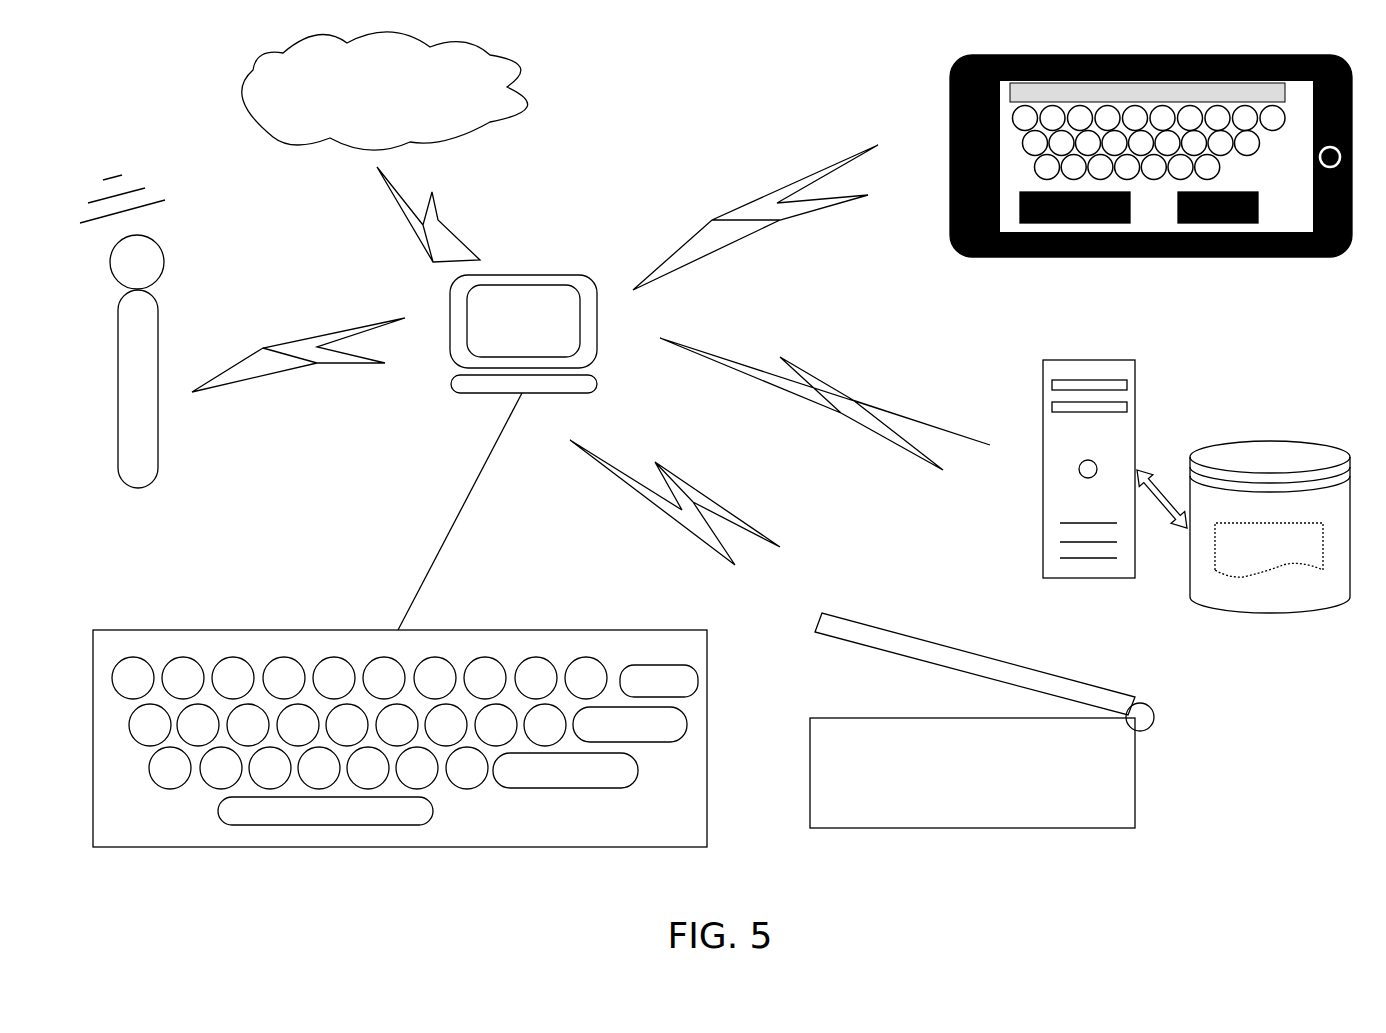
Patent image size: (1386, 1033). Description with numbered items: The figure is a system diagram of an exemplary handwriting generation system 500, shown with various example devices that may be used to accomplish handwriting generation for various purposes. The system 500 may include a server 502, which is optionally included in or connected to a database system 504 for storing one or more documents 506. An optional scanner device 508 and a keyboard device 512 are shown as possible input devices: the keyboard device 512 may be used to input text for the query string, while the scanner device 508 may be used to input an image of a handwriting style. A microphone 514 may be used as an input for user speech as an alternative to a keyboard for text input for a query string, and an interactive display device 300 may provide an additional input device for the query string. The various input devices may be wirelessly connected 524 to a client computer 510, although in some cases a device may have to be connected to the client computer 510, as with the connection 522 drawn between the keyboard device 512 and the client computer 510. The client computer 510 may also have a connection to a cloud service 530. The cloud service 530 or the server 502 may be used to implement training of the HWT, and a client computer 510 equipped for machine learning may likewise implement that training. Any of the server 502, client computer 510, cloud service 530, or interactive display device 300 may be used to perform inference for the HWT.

The interactive display device 300 is at (1151, 141).
The handwriting generation system 500 is at (729, 454).
The server 502 is at (1115, 446).
The database system 504 is at (1284, 531).
The documents 506 is at (1270, 570).
The scanner device 508 is at (1097, 810).
The client computer 510 is at (523, 306).
The keyboard device 512 is at (233, 630).
The microphone 514 is at (165, 258).
The wired connection 522 is at (458, 511).
The wireless connection 524 is at (883, 362).
The cloud service 530 is at (385, 91).